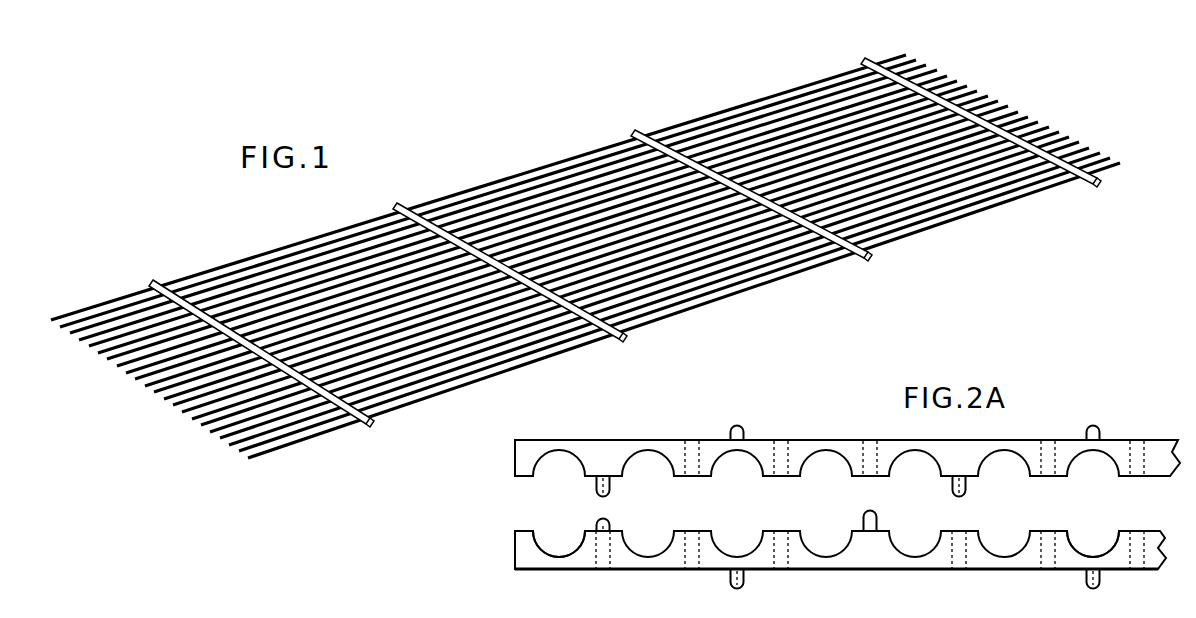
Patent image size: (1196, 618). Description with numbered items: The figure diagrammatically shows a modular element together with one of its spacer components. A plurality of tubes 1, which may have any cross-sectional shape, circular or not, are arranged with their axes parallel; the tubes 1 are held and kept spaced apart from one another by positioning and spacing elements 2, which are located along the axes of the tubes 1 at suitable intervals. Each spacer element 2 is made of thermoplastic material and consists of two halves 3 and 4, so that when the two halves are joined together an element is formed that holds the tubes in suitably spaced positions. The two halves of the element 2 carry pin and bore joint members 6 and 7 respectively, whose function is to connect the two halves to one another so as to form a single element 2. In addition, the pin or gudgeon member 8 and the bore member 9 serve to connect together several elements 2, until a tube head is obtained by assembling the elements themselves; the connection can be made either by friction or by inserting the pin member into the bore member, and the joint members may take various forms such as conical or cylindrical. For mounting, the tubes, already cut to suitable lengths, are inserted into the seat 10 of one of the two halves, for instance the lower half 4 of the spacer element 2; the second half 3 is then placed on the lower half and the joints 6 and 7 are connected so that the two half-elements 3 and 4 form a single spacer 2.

In FIG. 1, the tubes 1 is at (463, 182).
In FIG. 1, the positioning and spacing element 2 is at (364, 416).
In FIG. 2A, the upper half 3 is at (580, 432).
In FIG. 2A, the lower half 4 is at (510, 570).
In FIG. 2A, the pin joint member 6 is at (970, 488).
In FIG. 2A, the bore joint member 7 is at (864, 446).
In FIG. 2A, the pin or gudgeon member 8 is at (737, 424).
In FIG. 2A, the bore member 9 is at (684, 440).
In FIG. 2A, the seat 10 is at (542, 522).